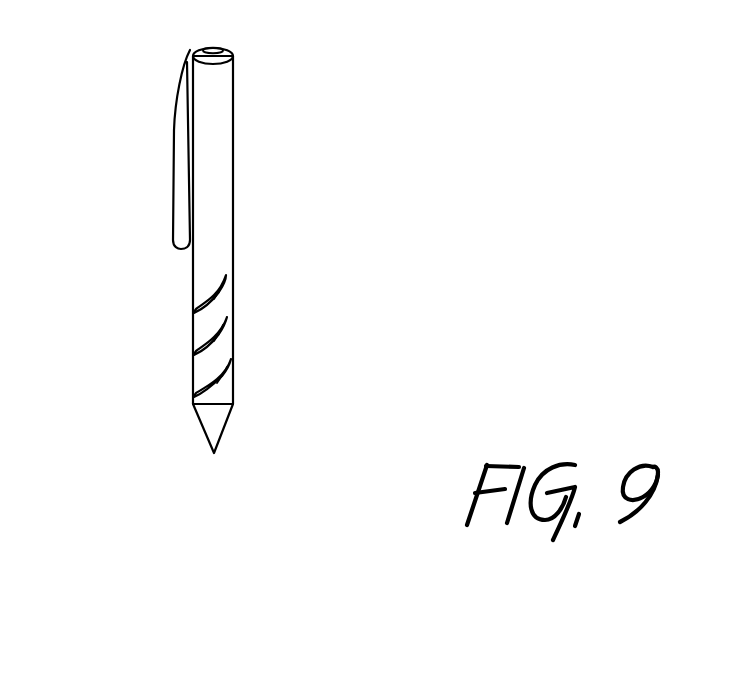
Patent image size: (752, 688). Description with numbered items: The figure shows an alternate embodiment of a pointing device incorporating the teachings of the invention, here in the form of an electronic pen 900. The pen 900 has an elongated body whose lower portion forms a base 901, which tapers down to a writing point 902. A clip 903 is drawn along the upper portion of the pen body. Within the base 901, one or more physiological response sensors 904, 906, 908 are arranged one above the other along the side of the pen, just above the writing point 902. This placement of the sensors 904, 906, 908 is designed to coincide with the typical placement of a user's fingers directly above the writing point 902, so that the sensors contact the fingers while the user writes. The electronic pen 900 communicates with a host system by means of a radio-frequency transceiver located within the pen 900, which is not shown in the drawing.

The electronic pen 900 is at (100, 62).
The base 901 is at (222, 143).
The writing point 902 is at (213, 424).
The clip 903 is at (178, 135).
The physiological response sensor 904 is at (225, 295).
The physiological response sensor 906 is at (226, 334).
The physiological response sensor 908 is at (233, 378).